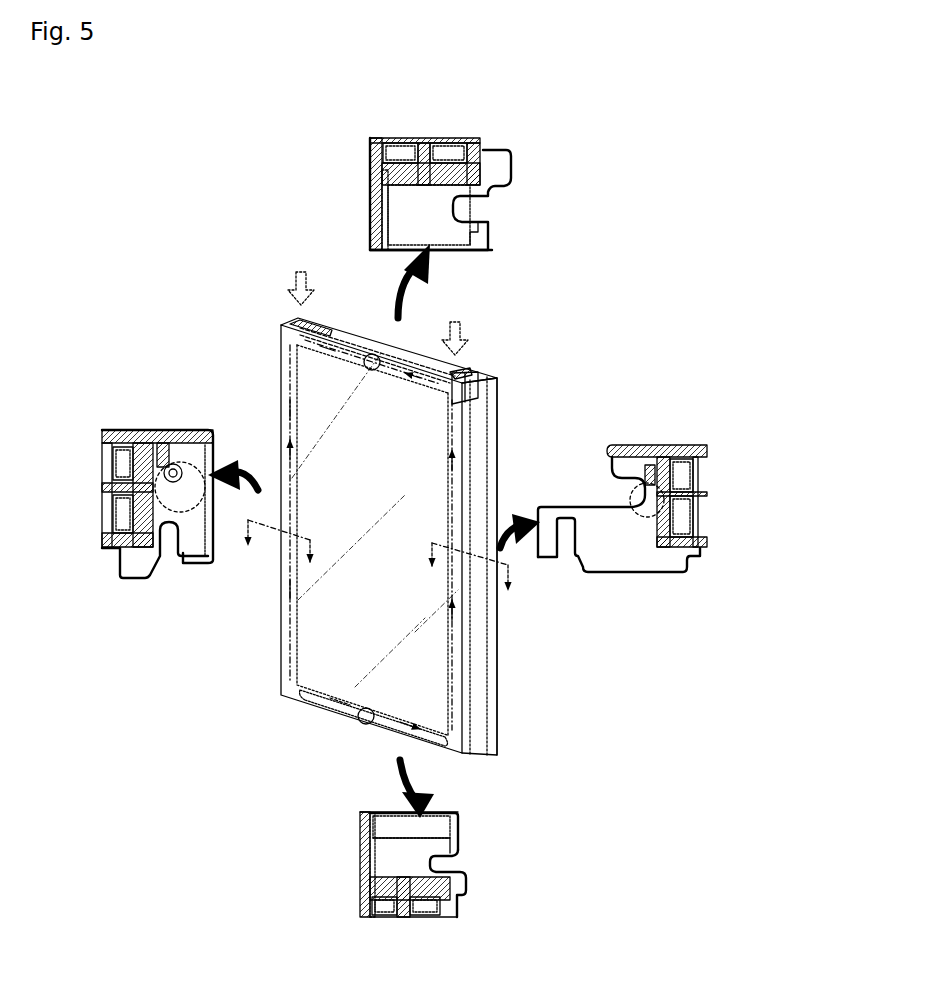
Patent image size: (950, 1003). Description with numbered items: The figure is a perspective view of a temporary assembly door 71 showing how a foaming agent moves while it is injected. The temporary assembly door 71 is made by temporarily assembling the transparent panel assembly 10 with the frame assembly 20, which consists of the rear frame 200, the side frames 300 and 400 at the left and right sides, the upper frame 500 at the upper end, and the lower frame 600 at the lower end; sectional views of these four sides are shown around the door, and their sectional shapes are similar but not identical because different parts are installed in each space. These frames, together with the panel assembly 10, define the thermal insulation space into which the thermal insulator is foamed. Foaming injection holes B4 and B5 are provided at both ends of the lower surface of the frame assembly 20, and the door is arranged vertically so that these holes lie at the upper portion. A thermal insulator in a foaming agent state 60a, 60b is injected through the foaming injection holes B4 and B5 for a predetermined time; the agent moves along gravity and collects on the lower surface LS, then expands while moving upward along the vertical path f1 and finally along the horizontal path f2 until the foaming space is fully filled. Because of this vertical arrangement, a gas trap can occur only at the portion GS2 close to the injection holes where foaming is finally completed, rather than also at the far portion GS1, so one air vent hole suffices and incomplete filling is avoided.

The panel assembly 10 is at (412, 132).
The frame assembly 20 is at (485, 484).
The temporary assembly door 71 is at (505, 390).
The rear frame 200 is at (494, 216).
The side frame 300 is at (595, 500).
The side frame 400 is at (216, 452).
The upper frame 500 is at (395, 830).
The lower frame 600 is at (480, 248).
The thermal insulator in foaming agent state 60a is at (293, 280).
The pressing direction b 60b is at (461, 328).
The foaming injection hole B4 is at (292, 330).
The foaming injection hole B5 is at (465, 376).
The vertical path f1 is at (298, 420).
The horizontal path f2 is at (320, 338).
The portion far from the foaming injection holes GS1 is at (360, 722).
The portion close to the foaming injection holes GS2 is at (372, 354).
The lower surface LS is at (307, 701).